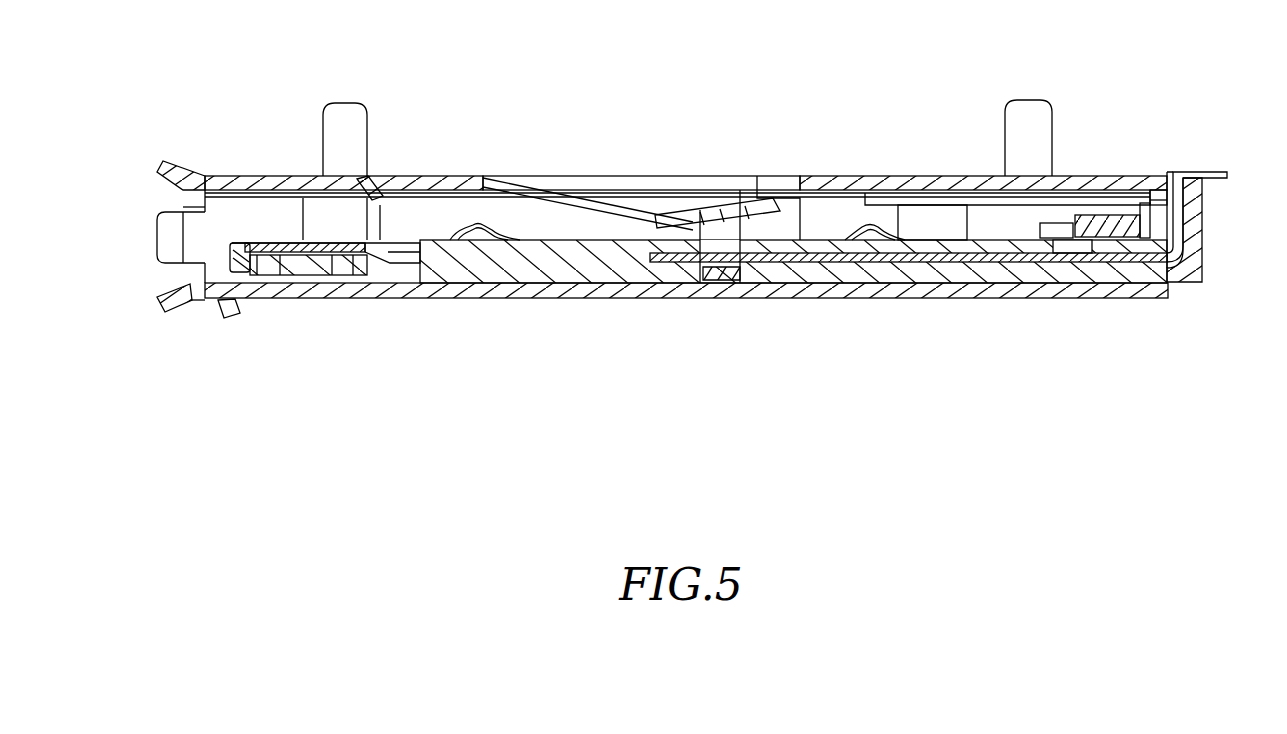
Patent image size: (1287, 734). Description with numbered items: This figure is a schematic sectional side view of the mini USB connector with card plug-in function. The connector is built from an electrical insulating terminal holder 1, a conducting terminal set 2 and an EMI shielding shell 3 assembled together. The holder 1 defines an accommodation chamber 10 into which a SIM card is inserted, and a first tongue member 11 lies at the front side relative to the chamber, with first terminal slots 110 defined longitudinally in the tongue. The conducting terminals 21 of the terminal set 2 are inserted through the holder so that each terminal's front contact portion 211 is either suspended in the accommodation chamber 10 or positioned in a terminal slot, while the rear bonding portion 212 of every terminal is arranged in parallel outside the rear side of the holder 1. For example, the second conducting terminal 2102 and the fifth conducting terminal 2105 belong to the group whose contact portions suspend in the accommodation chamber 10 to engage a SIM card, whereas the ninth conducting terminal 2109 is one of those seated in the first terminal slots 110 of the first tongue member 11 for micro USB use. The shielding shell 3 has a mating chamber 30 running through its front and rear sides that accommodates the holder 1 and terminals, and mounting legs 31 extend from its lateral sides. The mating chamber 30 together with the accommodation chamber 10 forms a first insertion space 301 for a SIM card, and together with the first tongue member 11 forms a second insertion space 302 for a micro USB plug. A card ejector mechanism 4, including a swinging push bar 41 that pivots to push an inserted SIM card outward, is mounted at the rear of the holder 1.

The electrical insulating terminal holder 1 is at (832, 272).
The accommodation chamber 10 is at (795, 235).
The first tongue member 11 is at (248, 268).
The first terminal slots 110 is at (265, 247).
The conducting terminal set 2 is at (756, 257).
The conducting terminals 21 is at (950, 262).
The contact portion 211 is at (293, 247).
The bonding portion 212 is at (1220, 172).
The second conducting terminal 2102 is at (478, 225).
The fifth conducting terminal 2105 is at (870, 225).
The ninth conducting terminal 2109 is at (307, 252).
The EMI shielding shell 3 is at (1100, 178).
The mating chamber 30 is at (188, 230).
The first insertion space 301 is at (944, 210).
The second insertion space 302 is at (215, 248).
The mounting legs 31 is at (1042, 130).
The card ejector mechanism 4 is at (1238, 250).
The swinging push bar 41 is at (1137, 230).